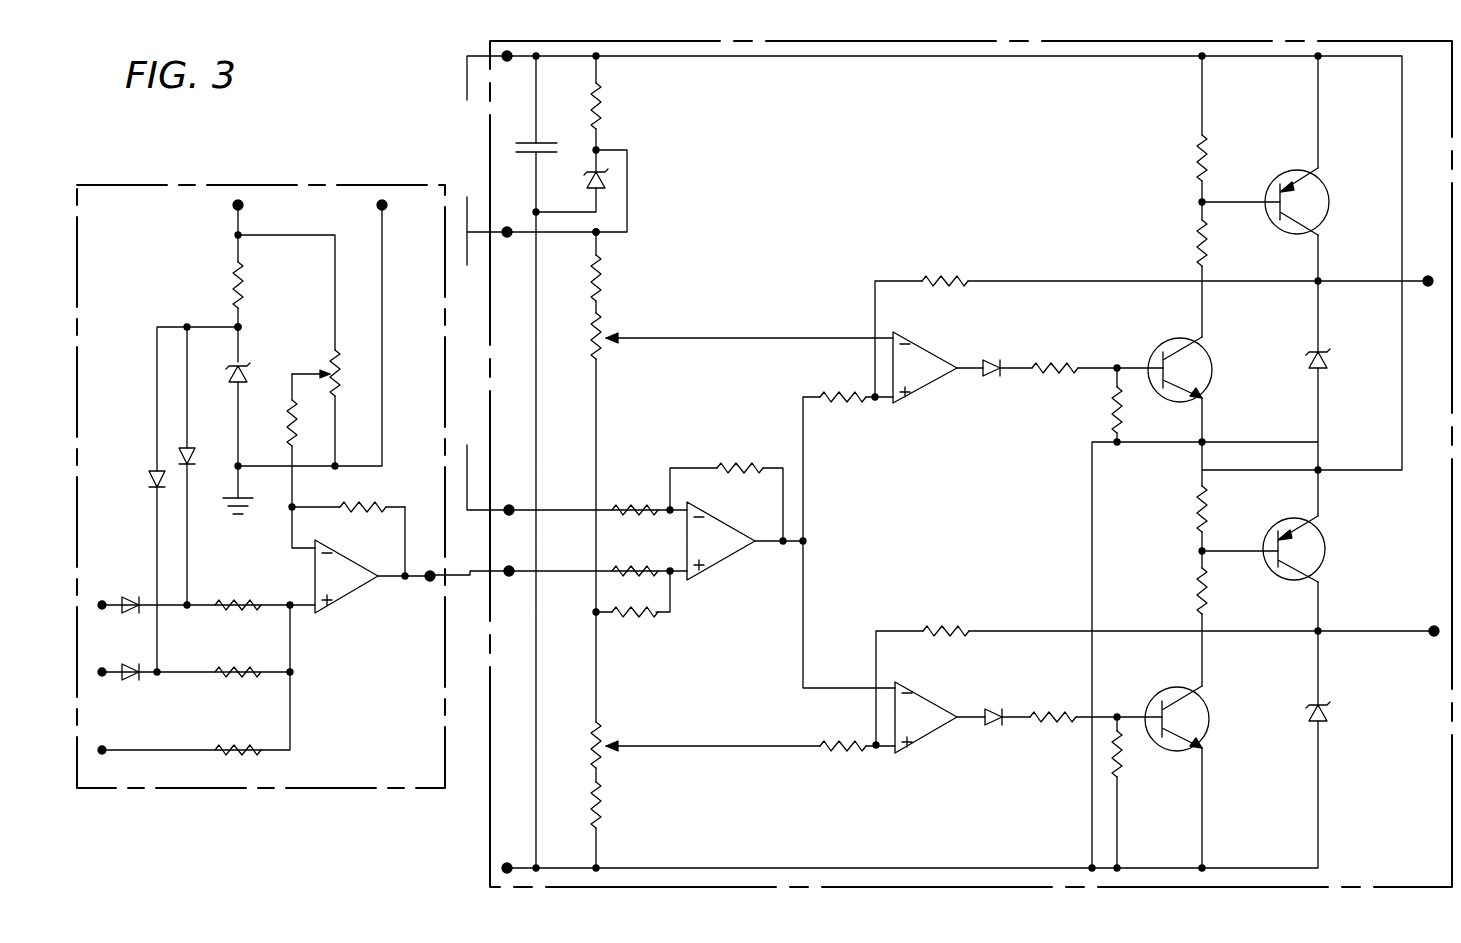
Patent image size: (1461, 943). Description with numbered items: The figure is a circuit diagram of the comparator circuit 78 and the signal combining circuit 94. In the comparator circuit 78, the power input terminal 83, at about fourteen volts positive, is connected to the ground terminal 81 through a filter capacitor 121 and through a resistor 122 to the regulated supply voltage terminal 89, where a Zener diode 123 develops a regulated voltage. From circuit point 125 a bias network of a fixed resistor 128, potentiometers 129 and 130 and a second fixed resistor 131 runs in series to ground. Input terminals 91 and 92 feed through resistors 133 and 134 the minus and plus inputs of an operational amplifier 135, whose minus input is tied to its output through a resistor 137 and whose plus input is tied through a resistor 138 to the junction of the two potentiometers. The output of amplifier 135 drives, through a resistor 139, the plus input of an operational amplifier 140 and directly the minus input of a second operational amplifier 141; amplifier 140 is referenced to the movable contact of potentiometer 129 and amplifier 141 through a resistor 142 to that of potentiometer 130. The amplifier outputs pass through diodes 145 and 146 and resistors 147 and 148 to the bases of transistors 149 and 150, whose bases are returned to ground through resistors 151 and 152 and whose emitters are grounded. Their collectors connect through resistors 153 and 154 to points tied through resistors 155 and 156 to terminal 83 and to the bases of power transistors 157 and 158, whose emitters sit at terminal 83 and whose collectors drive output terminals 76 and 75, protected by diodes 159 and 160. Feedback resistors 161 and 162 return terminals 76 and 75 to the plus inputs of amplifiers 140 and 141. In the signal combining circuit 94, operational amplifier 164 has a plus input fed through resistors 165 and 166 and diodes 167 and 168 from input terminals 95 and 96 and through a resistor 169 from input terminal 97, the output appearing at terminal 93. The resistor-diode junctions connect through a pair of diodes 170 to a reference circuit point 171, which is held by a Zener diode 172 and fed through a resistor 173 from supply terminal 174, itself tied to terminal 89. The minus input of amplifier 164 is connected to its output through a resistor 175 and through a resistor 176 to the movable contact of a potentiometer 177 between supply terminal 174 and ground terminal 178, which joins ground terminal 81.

The output terminal 75 is at (1434, 625).
The output terminal 76 is at (1428, 276).
The comparator circuit 78 is at (960, 41).
The ground terminal 81 is at (510, 862).
The power input terminal 83 is at (507, 62).
The regulated supply voltage terminal 89 is at (507, 238).
The input terminal 91 is at (524, 486).
The input terminal 92 is at (508, 577).
The output terminal of signal combining circuit 93 is at (430, 582).
The signal combining circuit 94 is at (291, 198).
The input terminal 95 is at (102, 610).
The input terminal 96 is at (102, 678).
The input terminal 97 is at (102, 756).
The filter capacitor 121 is at (541, 141).
The resistor 122 is at (605, 118).
The Zener diode 123 is at (590, 178).
The circuit point 125 is at (602, 238).
The fixed resistor 128 is at (604, 292).
The potentiometer 129 is at (605, 350).
The potentiometer 130 is at (606, 731).
The second fixed resistor 131 is at (605, 806).
The resistor 133 is at (655, 504).
The resistor 134 is at (656, 565).
The operational amplifier 135 is at (727, 550).
The resistor 137 is at (742, 462).
The resistor 138 is at (618, 618).
The resistor 139 is at (822, 395).
The operational amplifier 140 is at (918, 390).
The second operational amplifier 141 is at (928, 740).
The resistor 142 is at (822, 754).
The diode 145 is at (993, 352).
The diode 146 is at (993, 710).
The resistor 147 is at (1074, 366).
The resistor 148 is at (1072, 712).
The transistor 149 is at (1210, 380).
The transistor 150 is at (1208, 728).
The resistor 151 is at (1110, 408).
The resistor 152 is at (1120, 774).
The resistor 153 is at (1196, 248).
The resistor 154 is at (1196, 598).
The resistor 155 is at (1196, 156).
The resistor 156 is at (1196, 500).
The power transistor 157 is at (1292, 180).
The power transistor 158 is at (1326, 548).
The protective diode 159 is at (1310, 352).
The protective diode 160 is at (1310, 706).
The feedback resistor 161 is at (950, 278).
The feedback resistor 162 is at (933, 628).
The operational amplifier 164 is at (342, 593).
The resistor 165 is at (244, 609).
The resistor 166 is at (220, 668).
The diode 167 is at (128, 598).
The diode 168 is at (140, 677).
The resistor 169 is at (235, 757).
The pair of diodes 170 is at (155, 468).
The circuit point 171 is at (242, 327).
The Zener diode 172 is at (236, 382).
The resistor 173 is at (236, 270).
The supply terminal 174 is at (233, 206).
The resistor 175 is at (347, 505).
The resistor 176 is at (290, 422).
The potentiometer 177 is at (330, 353).
The ground terminal 178 is at (378, 206).